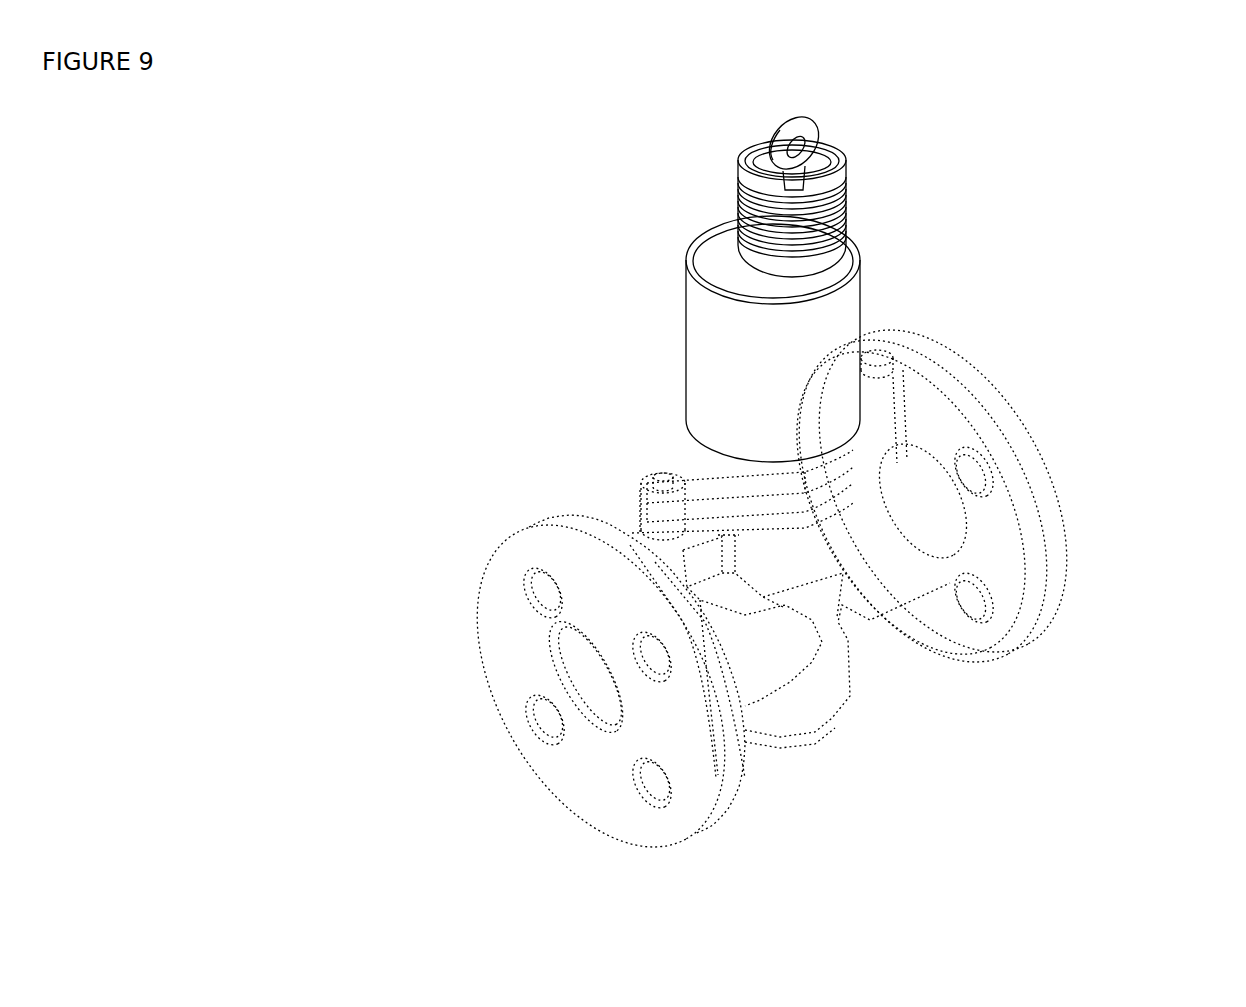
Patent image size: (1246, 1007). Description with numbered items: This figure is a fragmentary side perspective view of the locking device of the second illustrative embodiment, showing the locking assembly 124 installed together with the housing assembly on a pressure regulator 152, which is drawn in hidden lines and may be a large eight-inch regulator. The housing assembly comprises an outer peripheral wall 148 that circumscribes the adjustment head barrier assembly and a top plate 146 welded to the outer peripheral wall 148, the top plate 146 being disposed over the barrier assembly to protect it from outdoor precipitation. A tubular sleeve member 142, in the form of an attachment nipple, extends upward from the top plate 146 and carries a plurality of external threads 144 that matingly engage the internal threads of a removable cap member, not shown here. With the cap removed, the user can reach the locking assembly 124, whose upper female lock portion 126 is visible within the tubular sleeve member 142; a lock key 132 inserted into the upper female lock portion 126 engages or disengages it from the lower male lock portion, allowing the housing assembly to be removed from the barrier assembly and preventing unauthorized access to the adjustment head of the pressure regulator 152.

The locking assembly 124 is at (664, 198).
The upper female lock portion 126 is at (772, 183).
The lock key 132 is at (797, 122).
The tubular sleeve member 142 is at (835, 243).
The external threads 144 is at (848, 188).
The top plate 146 is at (733, 290).
The outer peripheral wall 148 is at (808, 345).
The pressure regulator 152 is at (932, 521).